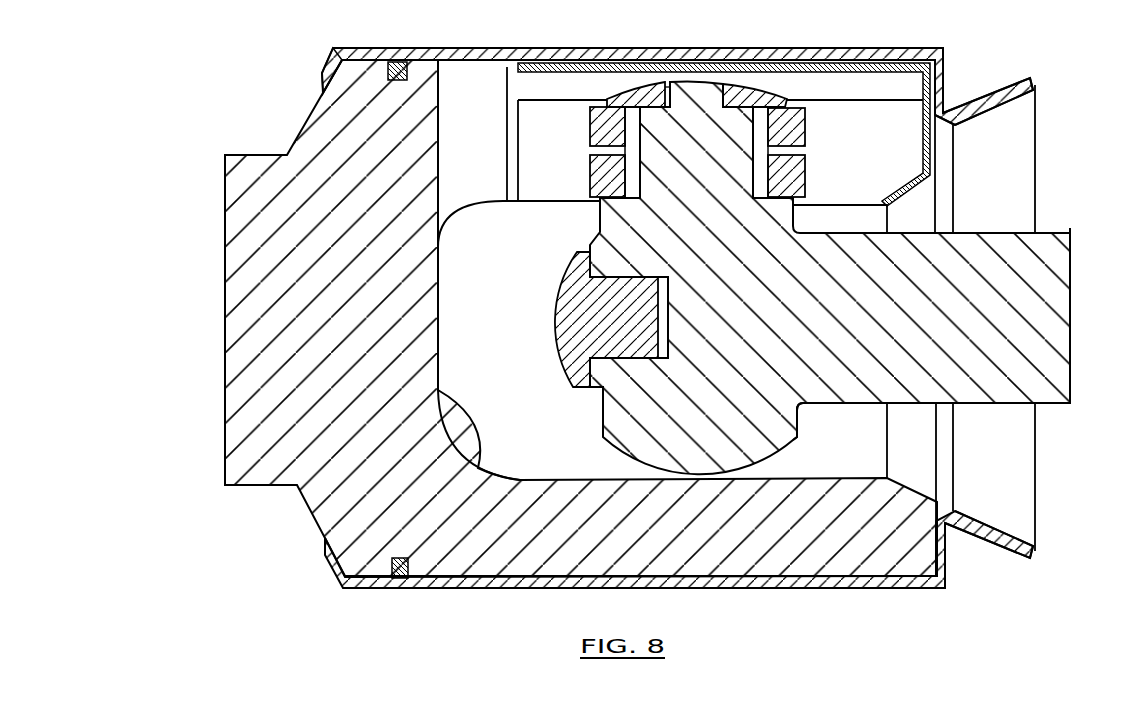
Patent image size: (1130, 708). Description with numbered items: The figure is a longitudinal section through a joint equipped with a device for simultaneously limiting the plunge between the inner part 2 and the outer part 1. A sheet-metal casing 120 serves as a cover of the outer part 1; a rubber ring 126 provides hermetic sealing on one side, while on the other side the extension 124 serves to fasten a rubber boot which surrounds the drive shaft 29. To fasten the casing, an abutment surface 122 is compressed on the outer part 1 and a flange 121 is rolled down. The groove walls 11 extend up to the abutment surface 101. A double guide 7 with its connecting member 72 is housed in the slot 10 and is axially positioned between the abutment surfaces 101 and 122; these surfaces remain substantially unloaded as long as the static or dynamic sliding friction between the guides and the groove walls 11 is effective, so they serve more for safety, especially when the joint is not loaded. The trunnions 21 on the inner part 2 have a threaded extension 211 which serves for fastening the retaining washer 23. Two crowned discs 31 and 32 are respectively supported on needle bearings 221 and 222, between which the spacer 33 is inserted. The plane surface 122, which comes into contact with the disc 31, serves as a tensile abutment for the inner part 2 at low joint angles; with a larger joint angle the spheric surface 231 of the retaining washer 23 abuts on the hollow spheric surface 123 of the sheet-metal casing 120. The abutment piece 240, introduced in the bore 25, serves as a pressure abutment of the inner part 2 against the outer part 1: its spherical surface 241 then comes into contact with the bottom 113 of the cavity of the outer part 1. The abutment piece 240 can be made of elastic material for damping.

The outer part 1 is at (310, 490).
The inner part 2 is at (792, 410).
The double guide 7 is at (930, 172).
The slot 10 is at (455, 100).
The groove walls 11 is at (520, 96).
The trunnions 21 is at (693, 110).
The retaining washer 23 is at (772, 112).
The bore 25 is at (668, 328).
The drive shaft 29 is at (1062, 363).
The crowned disc 31 is at (589, 128).
The crowned disc 32 is at (589, 173).
The spacer 33 is at (800, 133).
The connecting member 72 is at (618, 70).
The abutment surface 101 is at (508, 100).
The bottom of the cavity 113 is at (478, 458).
The sheet-metal casing 120 is at (828, 588).
The flange 121 is at (330, 62).
The abutment surface 122 is at (943, 92).
The hollow spheric surface 123 is at (955, 125).
The extension 124 is at (993, 545).
The rubber ring 126 is at (398, 578).
The threaded extension 211 is at (668, 84).
The needle bearing 221 is at (747, 92).
The needle bearing 222 is at (803, 177).
The spheric surface 231 is at (778, 103).
The abutment piece 240 is at (614, 355).
The spherical surface 241 is at (575, 389).